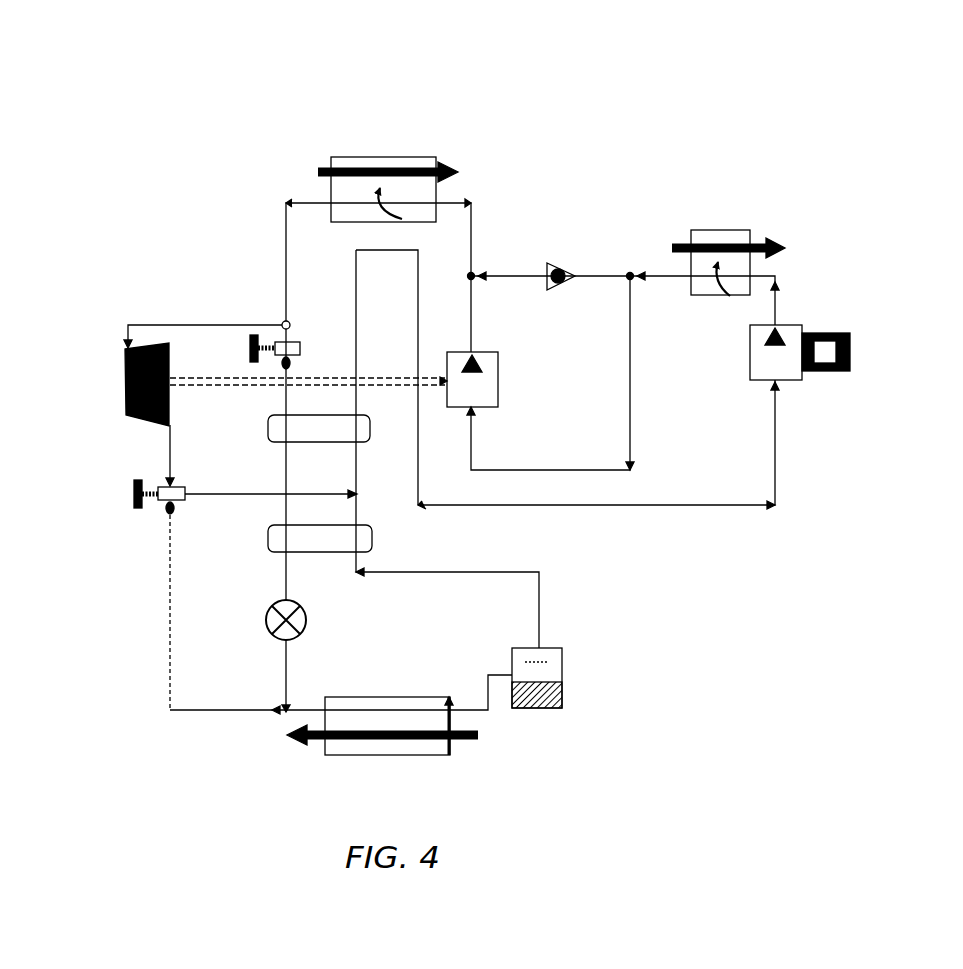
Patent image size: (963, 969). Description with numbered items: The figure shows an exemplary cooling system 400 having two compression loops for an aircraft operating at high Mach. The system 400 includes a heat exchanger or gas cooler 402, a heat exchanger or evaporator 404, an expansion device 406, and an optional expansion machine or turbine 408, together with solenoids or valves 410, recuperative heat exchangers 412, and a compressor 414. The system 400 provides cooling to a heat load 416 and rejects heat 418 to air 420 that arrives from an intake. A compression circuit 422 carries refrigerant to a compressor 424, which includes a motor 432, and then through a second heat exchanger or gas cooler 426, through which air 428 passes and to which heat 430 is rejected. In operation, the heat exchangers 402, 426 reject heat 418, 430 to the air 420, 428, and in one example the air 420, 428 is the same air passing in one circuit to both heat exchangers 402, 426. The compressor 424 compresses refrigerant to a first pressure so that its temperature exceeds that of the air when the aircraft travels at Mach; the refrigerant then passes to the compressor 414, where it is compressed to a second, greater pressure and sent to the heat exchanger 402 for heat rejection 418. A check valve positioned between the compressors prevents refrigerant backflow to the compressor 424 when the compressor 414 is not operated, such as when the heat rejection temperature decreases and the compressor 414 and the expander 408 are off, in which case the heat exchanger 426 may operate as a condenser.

The cooling system 400 is at (620, 110).
The heat exchanger or gas cooler 402 is at (418, 150).
The heat exchanger or evaporator 404 is at (436, 757).
The expansion device 406 is at (306, 622).
The expansion machine or turbine 408 is at (135, 422).
The solenoids or valves 410 is at (318, 331).
The recuperative heat exchangers 412 is at (373, 428).
The compressor 414 is at (505, 378).
The heat load 416 is at (468, 742).
The heat 418 is at (382, 218).
The air 420 is at (325, 165).
The compression circuit 422 is at (738, 562).
The compressor 424 is at (796, 324).
The second heat exchanger or gas cooler 426 is at (742, 228).
The air 428 is at (683, 246).
The heat 430 is at (741, 293).
The motor 432 is at (838, 372).